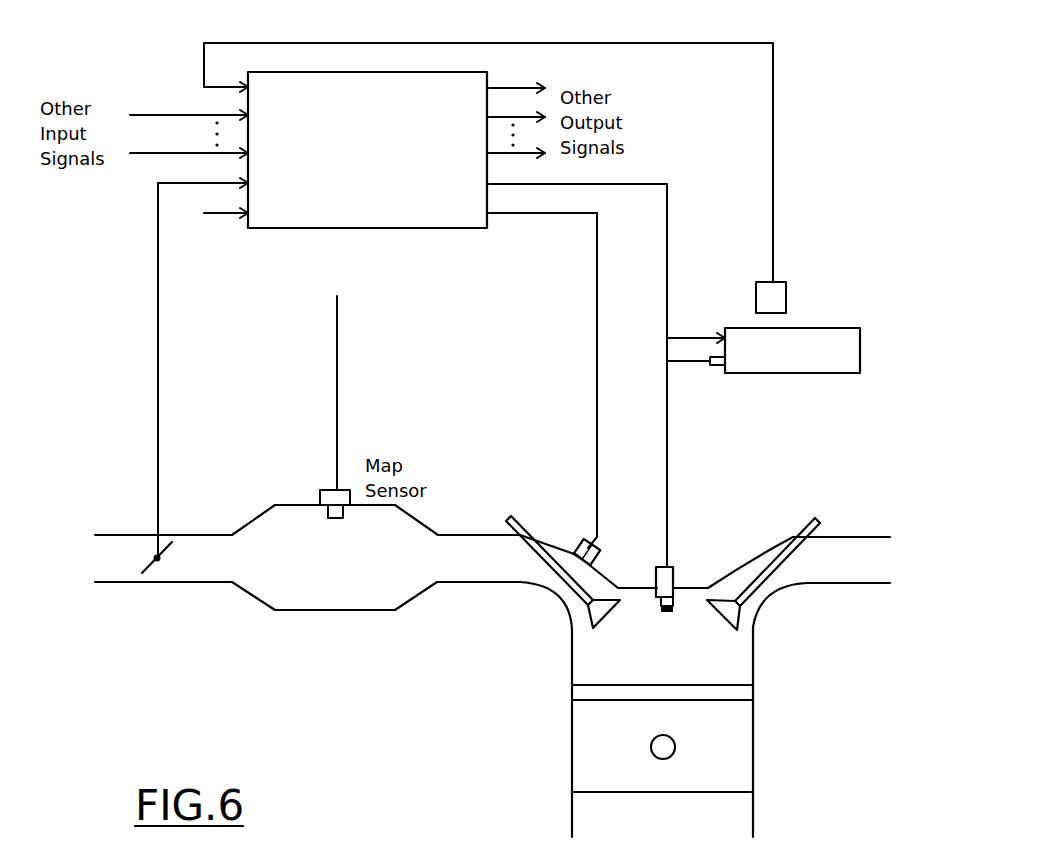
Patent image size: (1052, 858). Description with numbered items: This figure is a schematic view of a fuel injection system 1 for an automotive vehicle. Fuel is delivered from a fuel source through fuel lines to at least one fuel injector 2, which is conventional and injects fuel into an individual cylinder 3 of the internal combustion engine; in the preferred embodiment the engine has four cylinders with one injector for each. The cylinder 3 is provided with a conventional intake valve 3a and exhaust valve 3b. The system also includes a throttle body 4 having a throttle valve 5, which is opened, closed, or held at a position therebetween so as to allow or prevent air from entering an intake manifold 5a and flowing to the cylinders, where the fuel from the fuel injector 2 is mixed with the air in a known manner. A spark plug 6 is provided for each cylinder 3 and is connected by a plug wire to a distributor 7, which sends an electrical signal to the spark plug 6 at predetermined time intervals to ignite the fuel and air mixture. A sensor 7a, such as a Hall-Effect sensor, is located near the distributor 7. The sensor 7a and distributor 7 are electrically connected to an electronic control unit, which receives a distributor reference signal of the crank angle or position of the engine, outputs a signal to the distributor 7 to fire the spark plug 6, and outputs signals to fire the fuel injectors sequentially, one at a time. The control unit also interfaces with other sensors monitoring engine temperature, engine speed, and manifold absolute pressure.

The fuel injection system 1 is at (683, 131).
The fuel injector 2 is at (597, 550).
The cylinder 3 is at (752, 731).
The intake valve 3a is at (565, 583).
The exhaust valve 3b is at (797, 537).
The throttle body 4 is at (203, 535).
The throttle valve 5 is at (147, 566).
The intake manifold 5a is at (330, 607).
The spark plug 6 is at (657, 597).
The distributor 7 is at (853, 348).
The sensor 7a is at (778, 302).